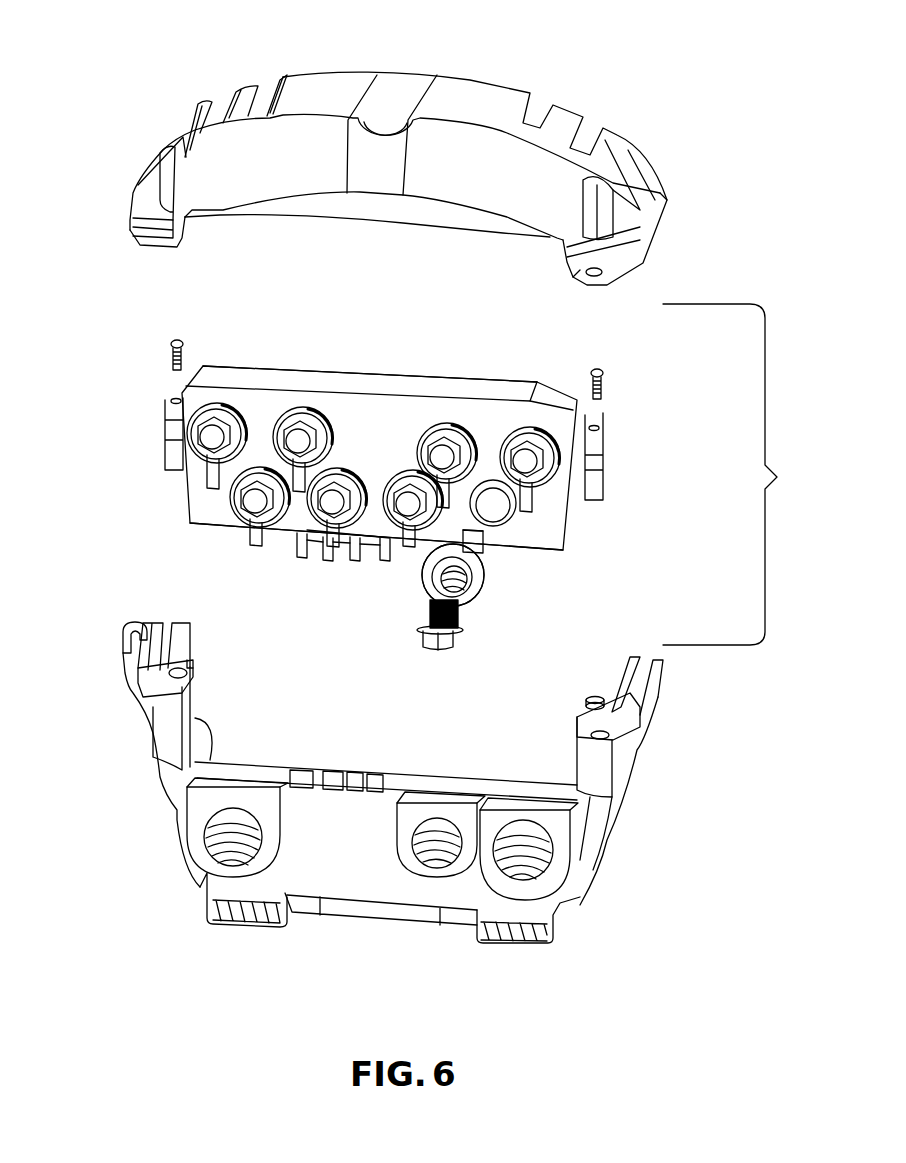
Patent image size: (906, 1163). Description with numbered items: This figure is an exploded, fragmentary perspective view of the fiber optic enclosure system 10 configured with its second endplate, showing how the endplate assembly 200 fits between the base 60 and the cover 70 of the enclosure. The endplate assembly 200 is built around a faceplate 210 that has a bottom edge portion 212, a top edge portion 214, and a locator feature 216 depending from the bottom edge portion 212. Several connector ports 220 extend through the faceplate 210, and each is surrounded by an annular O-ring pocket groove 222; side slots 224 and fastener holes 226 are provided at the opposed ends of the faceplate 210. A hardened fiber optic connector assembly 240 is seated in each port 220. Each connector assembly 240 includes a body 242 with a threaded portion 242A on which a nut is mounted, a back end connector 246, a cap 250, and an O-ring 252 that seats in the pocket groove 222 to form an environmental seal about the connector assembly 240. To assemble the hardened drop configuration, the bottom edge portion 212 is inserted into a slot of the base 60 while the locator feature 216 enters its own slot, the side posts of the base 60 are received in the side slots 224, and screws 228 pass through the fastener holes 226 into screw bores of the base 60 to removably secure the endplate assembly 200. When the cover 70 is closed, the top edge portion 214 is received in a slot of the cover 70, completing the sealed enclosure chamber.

The fiber optic enclosure system 10 is at (115, 45).
The base 60 is at (175, 848).
The cover 70 is at (158, 130).
The endplate assembly 200 is at (683, 462).
The faceplate 210 is at (402, 370).
The bottom edge portion 212 is at (228, 515).
The top edge portion 214 is at (257, 372).
The locator feature 216 is at (317, 543).
The connector ports 220 is at (227, 403).
The annular O-ring pocket groove 222 is at (513, 510).
The side slots 224 is at (174, 434).
The fastener holes 226 is at (178, 402).
The screws 228 is at (176, 340).
The fiber optic connector assembly 240 is at (297, 414).
The body 242 is at (461, 596).
The threaded portion 242A is at (457, 533).
The back end connector 246 is at (445, 585).
The cap 250 is at (450, 642).
The O-ring 252 is at (465, 548).